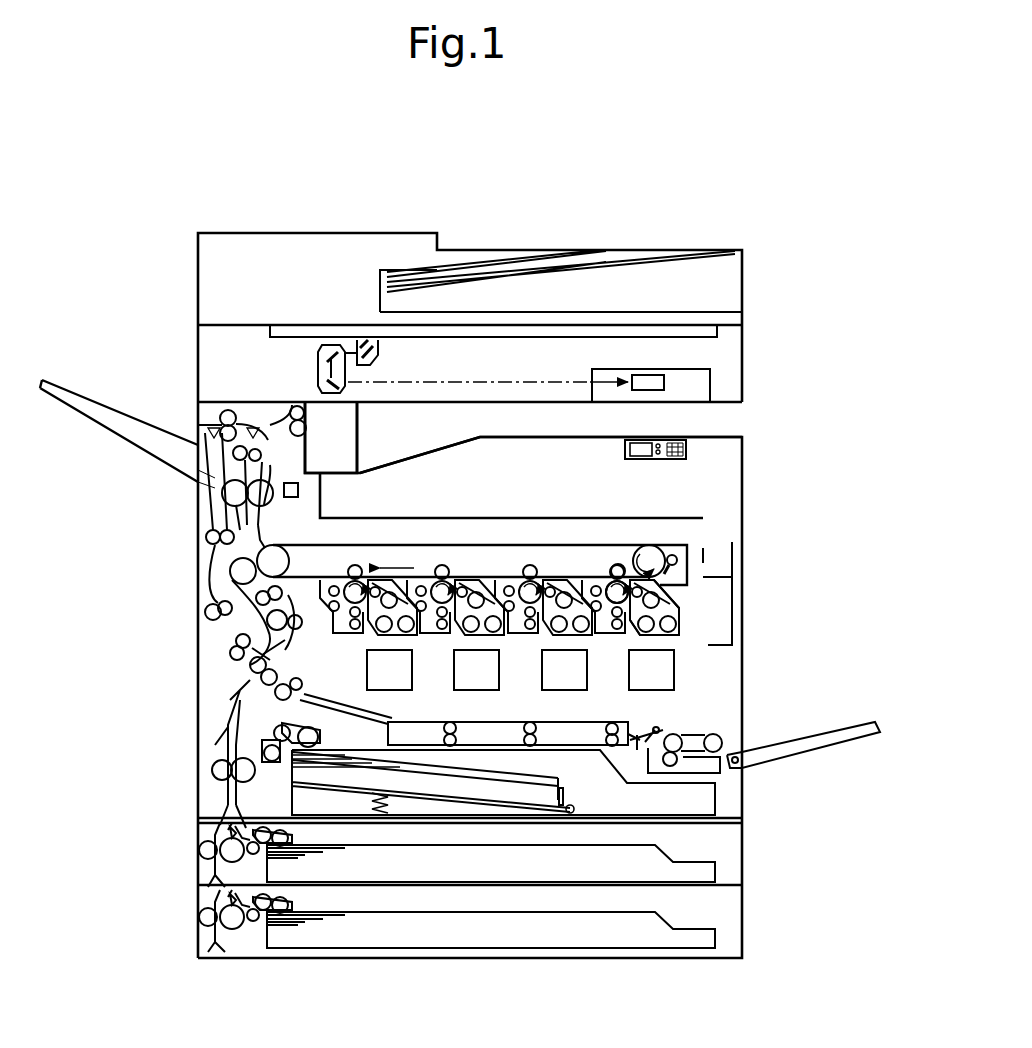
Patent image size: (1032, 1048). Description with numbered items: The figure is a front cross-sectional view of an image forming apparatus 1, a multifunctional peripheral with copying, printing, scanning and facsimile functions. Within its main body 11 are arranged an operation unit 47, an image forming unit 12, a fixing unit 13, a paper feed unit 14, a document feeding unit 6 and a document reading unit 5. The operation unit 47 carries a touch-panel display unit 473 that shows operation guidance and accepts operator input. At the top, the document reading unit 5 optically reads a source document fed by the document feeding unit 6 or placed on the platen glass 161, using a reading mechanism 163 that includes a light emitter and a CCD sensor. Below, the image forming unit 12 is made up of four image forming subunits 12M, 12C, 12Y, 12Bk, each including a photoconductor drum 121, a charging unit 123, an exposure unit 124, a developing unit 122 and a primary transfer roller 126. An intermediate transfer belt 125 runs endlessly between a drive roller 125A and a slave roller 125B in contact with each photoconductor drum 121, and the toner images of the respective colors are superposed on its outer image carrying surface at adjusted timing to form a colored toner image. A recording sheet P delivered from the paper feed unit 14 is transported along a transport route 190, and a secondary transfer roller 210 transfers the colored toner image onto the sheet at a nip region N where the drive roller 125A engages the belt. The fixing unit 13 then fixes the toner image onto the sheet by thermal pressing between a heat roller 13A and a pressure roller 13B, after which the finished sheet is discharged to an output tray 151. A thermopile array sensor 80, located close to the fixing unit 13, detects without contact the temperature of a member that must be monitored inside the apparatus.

The image forming apparatus 1 is at (824, 300).
The document reading unit 5 is at (410, 334).
The document feeding unit 6 is at (590, 230).
The main body 11 is at (748, 460).
The image forming unit 12 is at (706, 582).
The image forming subunit 12Bk is at (360, 568).
The image forming subunit 12Y is at (446, 565).
The image forming subunit 12C is at (540, 565).
The image forming subunit 12M is at (621, 558).
The fixing unit 13 is at (156, 460).
The heat roller 13A is at (217, 485).
The pressure roller 13B is at (217, 488).
The paper feed unit 14 is at (720, 846).
The operation unit 47 is at (690, 463).
The thermopile array sensor 80 is at (287, 482).
The photoconductor drum 121 is at (630, 605).
The developing unit 122 is at (682, 618).
The charging unit 123 is at (607, 630).
The exposure unit 124 is at (677, 677).
The intermediate transfer belt 125 is at (650, 550).
The drive roller 125A is at (292, 531).
The slave roller 125B is at (668, 560).
The primary transfer roller 126 is at (613, 566).
The output tray 151 is at (345, 473).
The platen glass 161 is at (606, 335).
The reading mechanism 163 is at (310, 373).
The transport route 190 is at (213, 577).
The secondary transfer roller 210 is at (262, 603).
The display unit 473 is at (628, 448).
The nip region N is at (222, 525).
The recording sheet P is at (556, 773).